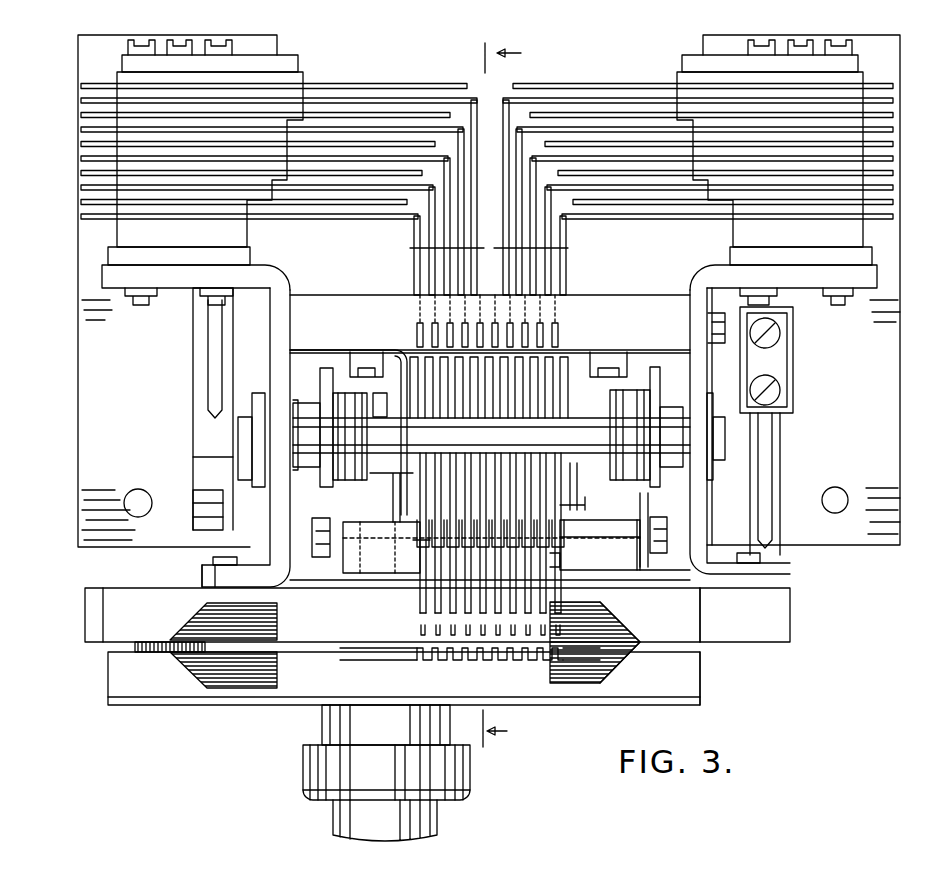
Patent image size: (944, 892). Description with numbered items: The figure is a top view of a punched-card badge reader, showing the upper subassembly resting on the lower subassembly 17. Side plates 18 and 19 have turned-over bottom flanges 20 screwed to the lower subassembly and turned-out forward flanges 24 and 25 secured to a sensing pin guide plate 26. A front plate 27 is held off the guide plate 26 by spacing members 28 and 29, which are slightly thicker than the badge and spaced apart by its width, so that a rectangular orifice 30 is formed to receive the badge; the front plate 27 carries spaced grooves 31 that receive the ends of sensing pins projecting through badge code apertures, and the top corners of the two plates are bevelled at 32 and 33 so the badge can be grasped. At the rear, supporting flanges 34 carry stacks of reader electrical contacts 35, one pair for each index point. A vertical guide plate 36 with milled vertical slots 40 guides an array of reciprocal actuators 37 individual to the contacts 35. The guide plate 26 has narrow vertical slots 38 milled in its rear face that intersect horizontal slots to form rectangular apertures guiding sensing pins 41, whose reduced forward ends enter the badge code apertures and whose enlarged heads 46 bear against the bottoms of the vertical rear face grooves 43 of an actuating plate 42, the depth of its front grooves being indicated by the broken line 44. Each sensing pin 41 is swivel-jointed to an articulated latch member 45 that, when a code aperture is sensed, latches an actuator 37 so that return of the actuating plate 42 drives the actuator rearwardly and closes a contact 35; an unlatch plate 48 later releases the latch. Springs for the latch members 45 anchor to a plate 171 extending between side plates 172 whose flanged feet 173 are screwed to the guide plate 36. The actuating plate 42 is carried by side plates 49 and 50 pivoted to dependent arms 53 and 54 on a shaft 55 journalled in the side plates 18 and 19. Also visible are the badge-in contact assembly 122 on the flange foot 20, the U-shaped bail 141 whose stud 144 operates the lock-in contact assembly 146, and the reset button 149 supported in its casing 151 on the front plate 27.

The lower subassembly 17 is at (516, 395).
The side plate 18 is at (697, 354).
The side plate 19 is at (272, 368).
The bottom flange 20 is at (78, 370).
The turned out flange 24 is at (780, 570).
The turned out flange 25 is at (205, 578).
The sensing pin guide plate 26 is at (786, 610).
The front plate 27 is at (700, 670).
The spacing member 28 is at (690, 642).
The spacing member 29 is at (147, 643).
The rectangular orifice 30 is at (350, 648).
The spaced grooves 31 is at (463, 657).
The bevel 32 is at (255, 620).
The bevel 33 is at (258, 667).
The supporting flange 34 is at (190, 288).
The reader electrical contacts 35 is at (362, 152).
The vertical guide plate 36 is at (650, 297).
The reciprocal actuator 37 is at (445, 274).
The vertical slots 38 is at (560, 592).
The vertical slots 40 is at (422, 335).
The sensing pin 41 is at (540, 592).
The actuating plate 42 is at (630, 520).
The vertical rear face grooves 43 is at (562, 536).
The broken line 44 is at (648, 562).
The articulated latch member 45 is at (540, 396).
The enlarged head 46 is at (562, 544).
The unlatch plate 48 is at (400, 352).
The side plate 49 is at (650, 577).
The side plate 50 is at (330, 507).
The dependent arm 53 is at (658, 386).
The dependent arm 54 is at (325, 381).
The shaft 55 is at (600, 394).
The electrical contact assembly 122 is at (768, 472).
The U-shaped bail 141 is at (222, 553).
The stud 144 is at (210, 531).
The electrical contact assembly 146 is at (212, 378).
The reset button 149 is at (437, 818).
The casing 151 is at (470, 768).
The plate 171 is at (572, 498).
The side plates 172 is at (395, 480).
The flanged feet 173 is at (362, 354).